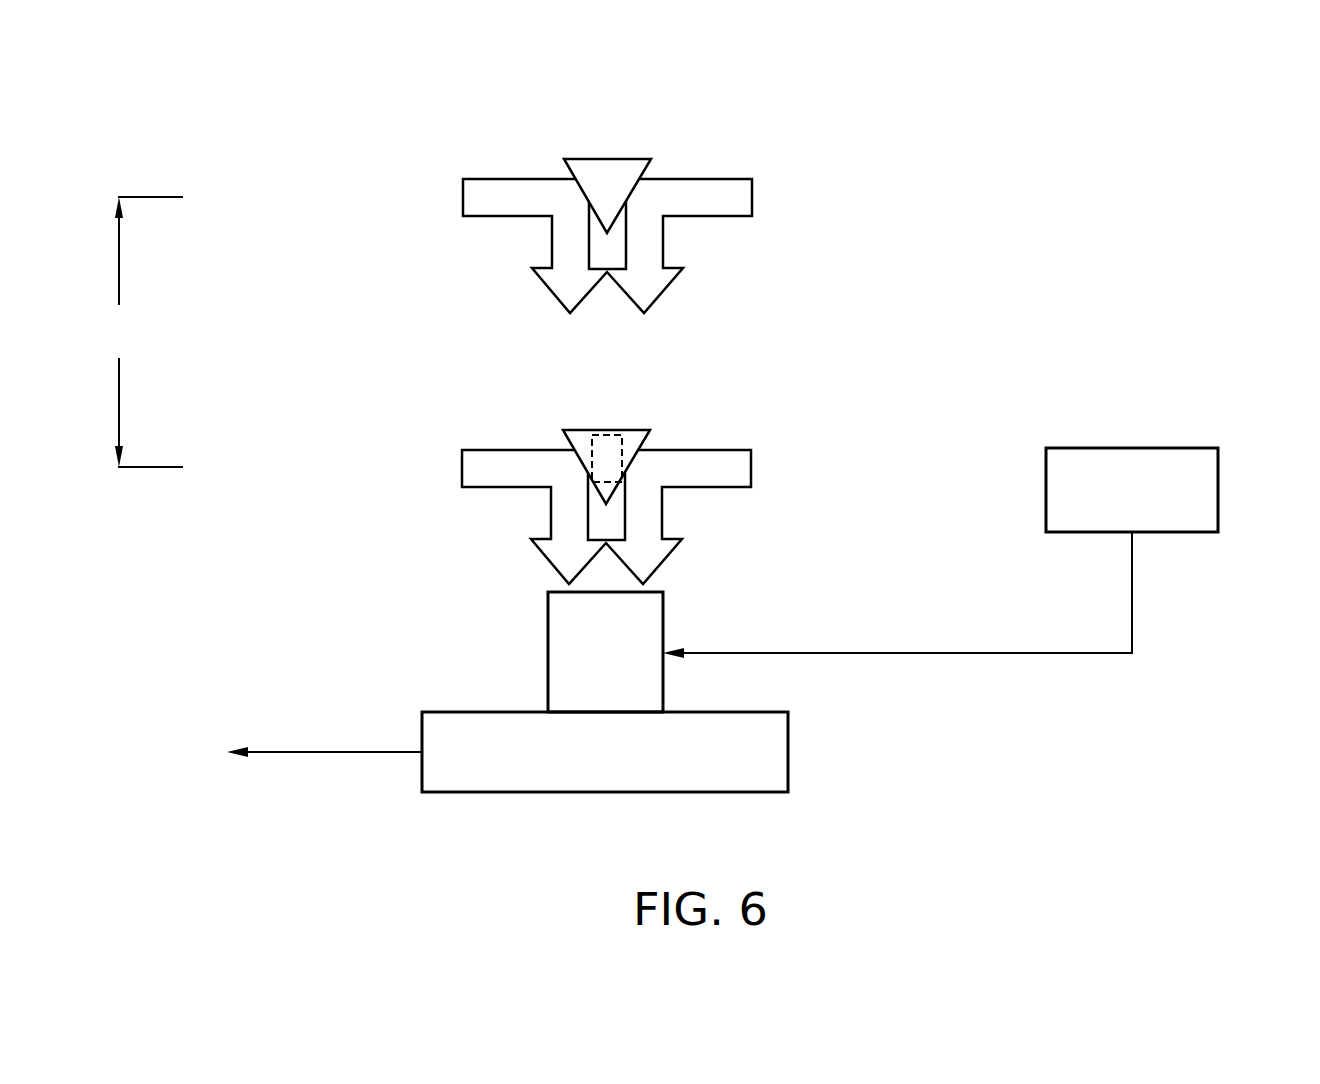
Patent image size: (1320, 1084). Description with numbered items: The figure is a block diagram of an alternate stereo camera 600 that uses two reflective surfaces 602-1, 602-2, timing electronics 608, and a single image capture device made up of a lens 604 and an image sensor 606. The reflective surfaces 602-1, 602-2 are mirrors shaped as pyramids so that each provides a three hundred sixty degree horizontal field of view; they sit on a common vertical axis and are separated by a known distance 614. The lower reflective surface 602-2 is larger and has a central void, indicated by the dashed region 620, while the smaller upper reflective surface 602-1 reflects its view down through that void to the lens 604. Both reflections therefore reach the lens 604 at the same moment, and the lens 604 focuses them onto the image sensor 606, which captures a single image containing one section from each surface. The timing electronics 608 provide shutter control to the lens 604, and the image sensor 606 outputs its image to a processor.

The stereo camera 600 is at (1001, 175).
The reflective surface 602-1 is at (566, 161).
The reflective surface 602-2 is at (565, 432).
The lens 604 is at (664, 613).
The image sensor 606 is at (789, 755).
The timing electronics 608 is at (1219, 481).
The known distance 614 is at (139, 332).
The region of interest 620 is at (623, 446).